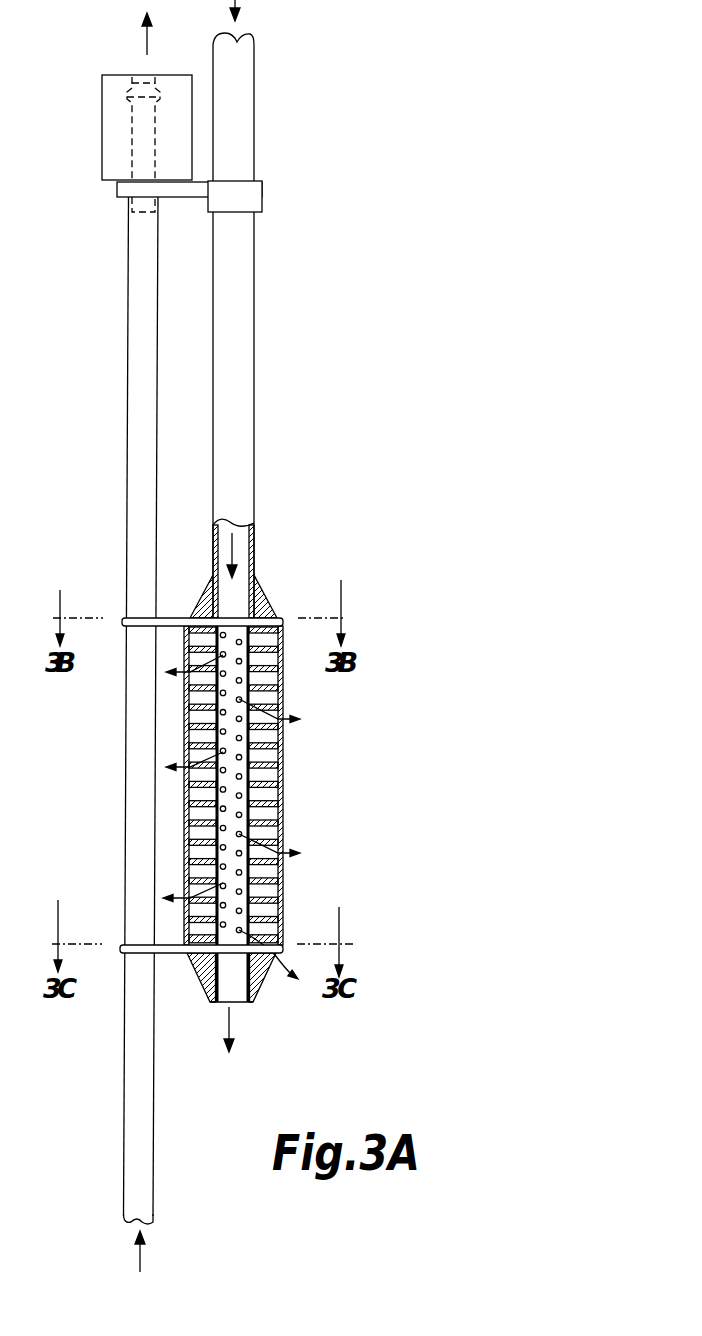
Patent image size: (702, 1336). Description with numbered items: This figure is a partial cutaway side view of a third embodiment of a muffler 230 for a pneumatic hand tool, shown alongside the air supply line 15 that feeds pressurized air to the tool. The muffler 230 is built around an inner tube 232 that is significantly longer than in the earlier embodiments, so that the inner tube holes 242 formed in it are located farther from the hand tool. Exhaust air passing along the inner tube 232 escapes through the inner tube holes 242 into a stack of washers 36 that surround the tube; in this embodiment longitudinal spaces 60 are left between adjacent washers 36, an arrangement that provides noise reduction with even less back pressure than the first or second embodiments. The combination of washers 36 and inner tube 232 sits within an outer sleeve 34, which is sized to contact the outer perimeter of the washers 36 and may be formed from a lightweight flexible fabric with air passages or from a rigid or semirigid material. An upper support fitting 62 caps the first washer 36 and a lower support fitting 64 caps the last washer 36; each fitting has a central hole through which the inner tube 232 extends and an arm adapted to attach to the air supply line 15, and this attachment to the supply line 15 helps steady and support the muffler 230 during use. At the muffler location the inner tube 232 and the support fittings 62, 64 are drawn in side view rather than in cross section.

The air supply line 15 is at (128, 335).
The outer sleeve 34 is at (188, 735).
The washers 36 is at (280, 800).
The longitudinal spaces 60 is at (280, 665).
The upper support fitting 62 is at (122, 623).
The lower support fitting 64 is at (120, 947).
The muffler 230 is at (282, 835).
The inner tube 232 is at (240, 740).
The inner tube holes 242 is at (239, 888).